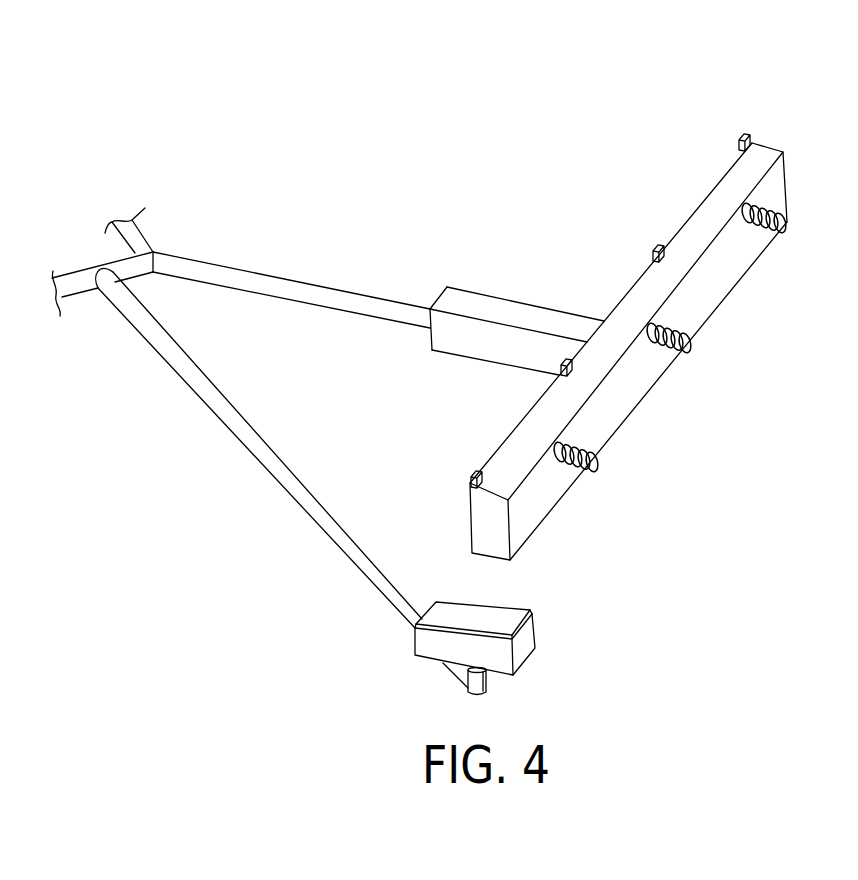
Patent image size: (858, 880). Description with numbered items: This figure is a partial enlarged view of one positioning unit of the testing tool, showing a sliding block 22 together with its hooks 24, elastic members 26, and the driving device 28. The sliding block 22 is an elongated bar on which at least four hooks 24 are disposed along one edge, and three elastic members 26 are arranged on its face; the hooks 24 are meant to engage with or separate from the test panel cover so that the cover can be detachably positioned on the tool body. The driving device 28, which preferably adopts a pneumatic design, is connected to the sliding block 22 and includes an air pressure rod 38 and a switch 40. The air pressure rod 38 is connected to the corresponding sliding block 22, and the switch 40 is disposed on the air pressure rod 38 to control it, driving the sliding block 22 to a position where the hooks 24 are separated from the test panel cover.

The sliding block 22 is at (762, 158).
The hook 24 is at (742, 134).
The elastic member 26 is at (783, 229).
The driving device 28 is at (448, 203).
The air pressure rod 38 is at (235, 269).
The switch 40 is at (445, 613).